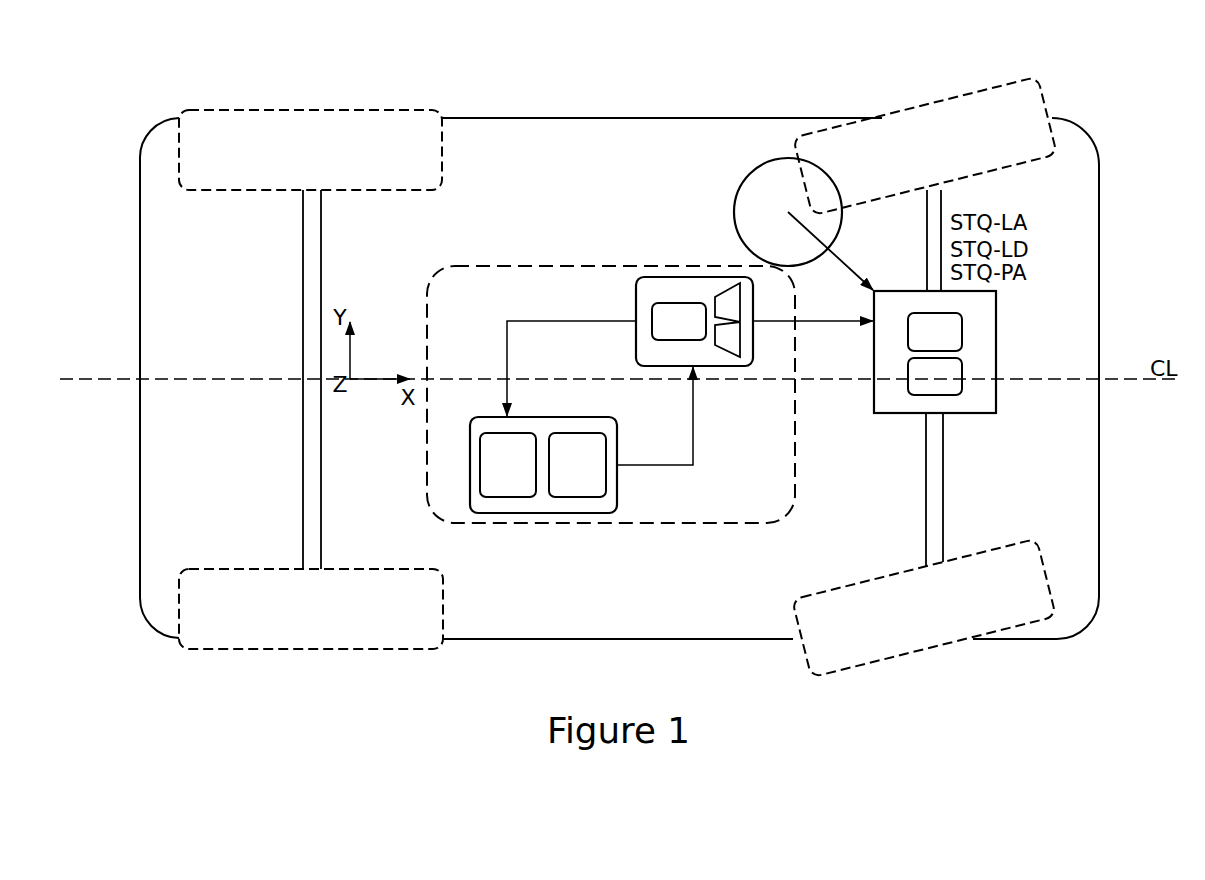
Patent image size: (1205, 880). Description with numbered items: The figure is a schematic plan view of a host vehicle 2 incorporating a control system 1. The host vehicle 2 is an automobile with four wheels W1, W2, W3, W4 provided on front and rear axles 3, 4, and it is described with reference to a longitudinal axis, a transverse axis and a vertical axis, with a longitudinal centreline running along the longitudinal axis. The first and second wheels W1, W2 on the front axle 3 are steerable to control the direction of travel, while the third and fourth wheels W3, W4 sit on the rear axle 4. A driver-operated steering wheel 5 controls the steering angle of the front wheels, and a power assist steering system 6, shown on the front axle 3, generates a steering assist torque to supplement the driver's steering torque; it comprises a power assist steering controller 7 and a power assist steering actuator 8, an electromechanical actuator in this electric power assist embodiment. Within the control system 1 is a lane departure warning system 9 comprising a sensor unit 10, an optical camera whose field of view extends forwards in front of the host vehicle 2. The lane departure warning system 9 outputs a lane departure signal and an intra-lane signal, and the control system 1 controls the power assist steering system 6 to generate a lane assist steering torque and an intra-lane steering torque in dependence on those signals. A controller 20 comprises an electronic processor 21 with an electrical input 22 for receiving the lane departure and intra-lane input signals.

The control system 1 is at (650, 417).
The host vehicle 2 is at (410, 84).
The front axle 3 is at (945, 460).
The rear axle 4 is at (302, 292).
The steering wheel 5 is at (740, 185).
The power assist steering system 6 is at (964, 352).
The power assist steering controller 7 is at (927, 345).
The power assist steering actuator 8 is at (927, 390).
The lane departure warning system 9 is at (656, 296).
The sensor unit 10 is at (718, 296).
The controller 20 is at (576, 467).
The electronic processor 21 is at (494, 477).
The electrical input 22 is at (563, 477).
The first wheel W1 is at (948, 101).
The second wheel W2 is at (918, 653).
The third wheel W3 is at (252, 108).
The fourth wheel W4 is at (247, 652).